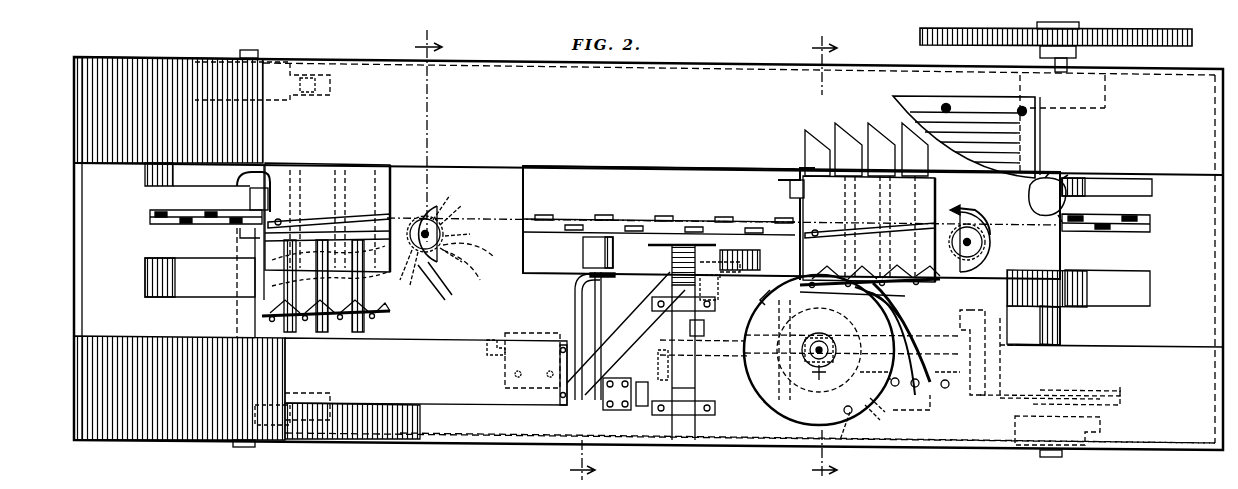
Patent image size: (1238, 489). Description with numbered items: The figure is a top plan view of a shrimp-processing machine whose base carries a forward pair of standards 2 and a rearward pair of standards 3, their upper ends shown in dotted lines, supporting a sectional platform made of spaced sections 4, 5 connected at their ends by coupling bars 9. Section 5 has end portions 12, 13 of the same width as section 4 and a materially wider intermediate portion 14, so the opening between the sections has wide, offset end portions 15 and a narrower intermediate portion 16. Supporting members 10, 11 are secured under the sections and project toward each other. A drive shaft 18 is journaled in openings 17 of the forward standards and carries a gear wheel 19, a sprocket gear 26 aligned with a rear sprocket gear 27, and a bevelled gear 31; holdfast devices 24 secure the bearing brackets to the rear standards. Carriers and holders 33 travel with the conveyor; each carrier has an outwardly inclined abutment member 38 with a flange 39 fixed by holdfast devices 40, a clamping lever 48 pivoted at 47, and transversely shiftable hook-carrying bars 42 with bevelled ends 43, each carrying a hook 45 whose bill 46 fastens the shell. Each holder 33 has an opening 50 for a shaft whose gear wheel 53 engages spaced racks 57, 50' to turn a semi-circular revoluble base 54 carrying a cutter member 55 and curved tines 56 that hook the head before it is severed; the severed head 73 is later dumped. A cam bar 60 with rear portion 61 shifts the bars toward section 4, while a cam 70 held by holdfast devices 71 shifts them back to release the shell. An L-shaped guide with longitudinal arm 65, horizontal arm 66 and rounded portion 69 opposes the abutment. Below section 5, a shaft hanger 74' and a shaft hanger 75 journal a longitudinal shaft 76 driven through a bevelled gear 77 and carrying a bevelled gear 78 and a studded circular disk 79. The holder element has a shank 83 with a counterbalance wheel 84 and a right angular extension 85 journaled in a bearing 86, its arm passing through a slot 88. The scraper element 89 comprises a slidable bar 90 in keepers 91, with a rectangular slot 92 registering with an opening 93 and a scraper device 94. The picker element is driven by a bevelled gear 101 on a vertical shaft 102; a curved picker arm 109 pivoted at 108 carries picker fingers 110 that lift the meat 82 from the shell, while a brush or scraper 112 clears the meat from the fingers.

The forward standards 2 is at (1035, 445).
The rearward standards 3 is at (428, 128).
The platform section 4 is at (881, 249).
The platform section 5 is at (462, 440).
The coupling bars 9 is at (86, 226).
The supporting member 10 is at (1155, 190).
The supporting member 11 is at (1152, 285).
The end portion 12 is at (153, 336).
The end portion 13 is at (1118, 352).
The intermediate portion 14 is at (1005, 325).
The end portion of opening 15 is at (647, 277).
The intermediate portion of opening 16 is at (661, 178).
The opening 17 is at (1056, 457).
The drive shaft 18 is at (1070, 60).
The gear wheel 19 is at (1008, 50).
The holdfast devices 24 is at (335, 84).
The sprocket gear 26 is at (1150, 220).
The sprocket gear 27 is at (185, 208).
The bevelled gear 31 is at (1125, 395).
The holder 33 is at (524, 198).
The abutment member 38 is at (362, 218).
The flange 39 is at (318, 218).
The holdfast devices 40 is at (280, 220).
The hook-carrying bars 42 is at (330, 176).
The bevelled end 43 is at (380, 176).
The hook 45 is at (345, 322).
The bill 46 is at (372, 314).
The pivot 47 is at (239, 188).
The clamping lever 48 is at (240, 242).
The opening 50 is at (467, 238).
The rack 50' is at (740, 233).
The gear wheel 53 is at (437, 228).
The revoluble base 54 is at (428, 216).
The cutter member 55 is at (955, 210).
The tines 56 is at (455, 303).
The rack 57 is at (365, 248).
The cam bar 60 is at (426, 371).
The rear portion 61 is at (465, 395).
The longitudinal arm 65 is at (578, 290).
The horizontal arm 66 is at (590, 300).
The rounded portion 69 is at (575, 280).
The cam 70 is at (1030, 136).
The holdfast devices 71 is at (952, 108).
The severed head 73 is at (1060, 182).
The slide 74' is at (514, 360).
The shaft hanger 75 is at (930, 398).
The longitudinal shaft 76 is at (495, 340).
The bevelled gear 77 is at (990, 382).
The bevelled gear 78 is at (852, 350).
The circular disk 79 is at (698, 376).
The meat 82 is at (890, 415).
The shank 83 is at (598, 310).
The wheel 84 is at (583, 246).
The right angular extension 85 is at (603, 400).
The bearing 86 is at (616, 410).
The slot 88 is at (642, 406).
The scraper element 89 is at (720, 308).
The slidable bar 90 is at (700, 392).
The keepers 91 is at (715, 408).
The rectangular slot 92 is at (698, 352).
The opening 93 is at (704, 328).
The scraper device 94 is at (670, 248).
The bevelled gear 101 is at (814, 370).
The vertical shaft 102 is at (826, 340).
The pivot 108 is at (844, 408).
The picker arm 109 is at (905, 316).
The picker fingers 110 is at (940, 385).
The brush or scraper 112 is at (861, 428).